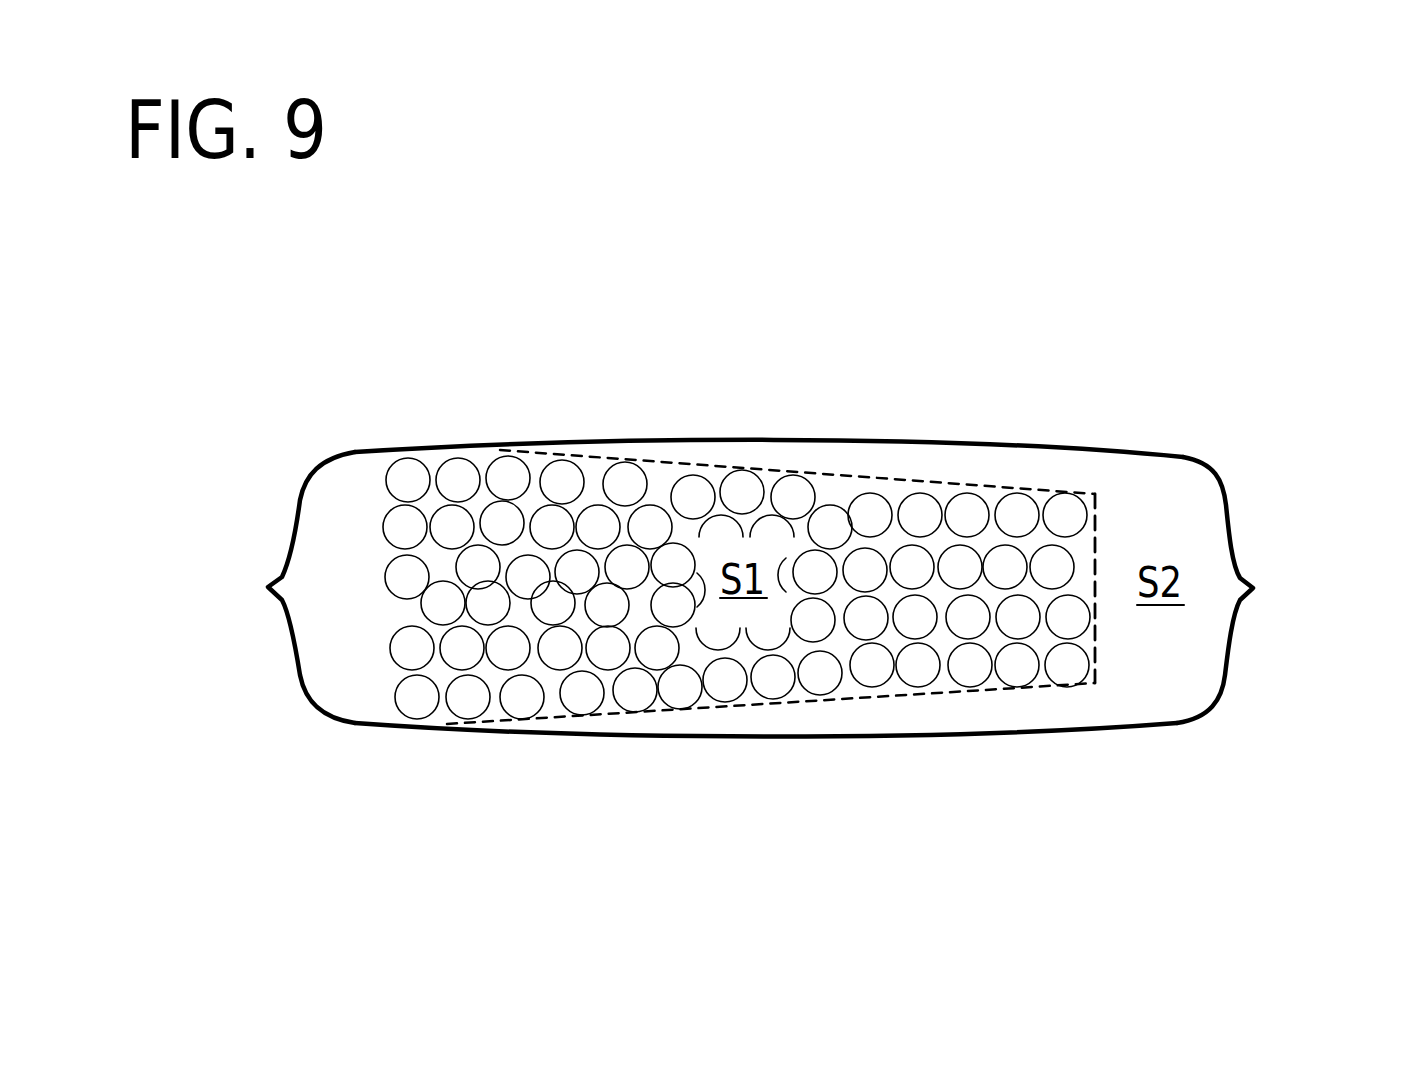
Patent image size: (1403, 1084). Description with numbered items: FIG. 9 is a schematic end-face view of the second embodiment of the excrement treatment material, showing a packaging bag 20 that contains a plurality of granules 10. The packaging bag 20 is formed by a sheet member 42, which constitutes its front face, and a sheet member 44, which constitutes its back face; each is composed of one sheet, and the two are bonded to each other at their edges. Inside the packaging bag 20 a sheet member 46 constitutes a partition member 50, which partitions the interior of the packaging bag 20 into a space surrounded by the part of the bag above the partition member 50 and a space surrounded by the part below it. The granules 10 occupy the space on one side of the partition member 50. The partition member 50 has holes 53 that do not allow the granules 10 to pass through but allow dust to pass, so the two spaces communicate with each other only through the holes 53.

The granules 10 is at (507, 477).
The packaging bag 20 is at (760, 592).
The sheet member 42 is at (792, 437).
The sheet member 44 is at (810, 738).
The sheet member 46 is at (1100, 512).
The partition member 50 is at (938, 527).
The hole 53 is at (1095, 647).